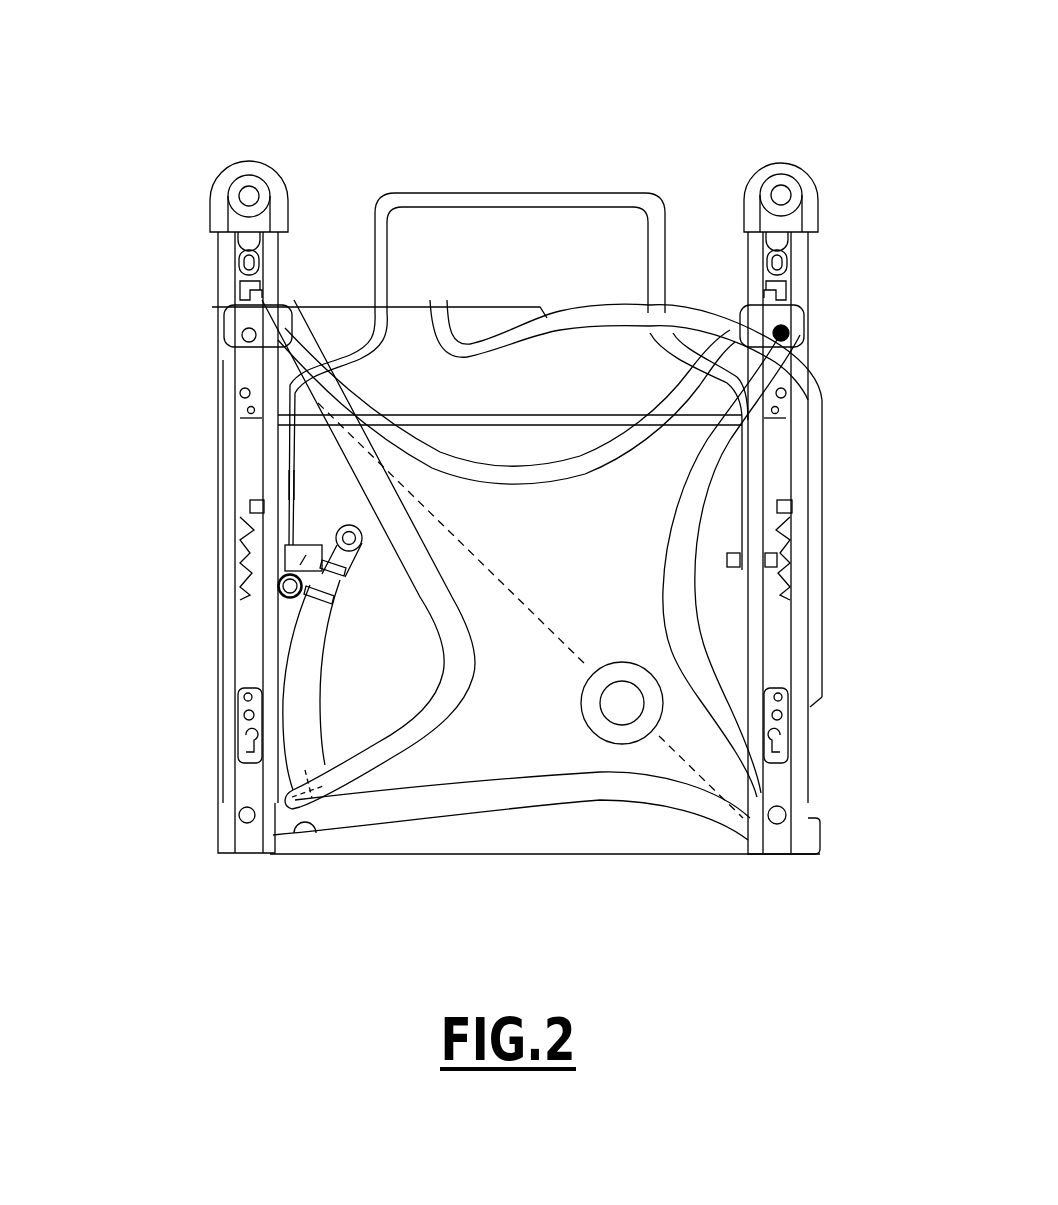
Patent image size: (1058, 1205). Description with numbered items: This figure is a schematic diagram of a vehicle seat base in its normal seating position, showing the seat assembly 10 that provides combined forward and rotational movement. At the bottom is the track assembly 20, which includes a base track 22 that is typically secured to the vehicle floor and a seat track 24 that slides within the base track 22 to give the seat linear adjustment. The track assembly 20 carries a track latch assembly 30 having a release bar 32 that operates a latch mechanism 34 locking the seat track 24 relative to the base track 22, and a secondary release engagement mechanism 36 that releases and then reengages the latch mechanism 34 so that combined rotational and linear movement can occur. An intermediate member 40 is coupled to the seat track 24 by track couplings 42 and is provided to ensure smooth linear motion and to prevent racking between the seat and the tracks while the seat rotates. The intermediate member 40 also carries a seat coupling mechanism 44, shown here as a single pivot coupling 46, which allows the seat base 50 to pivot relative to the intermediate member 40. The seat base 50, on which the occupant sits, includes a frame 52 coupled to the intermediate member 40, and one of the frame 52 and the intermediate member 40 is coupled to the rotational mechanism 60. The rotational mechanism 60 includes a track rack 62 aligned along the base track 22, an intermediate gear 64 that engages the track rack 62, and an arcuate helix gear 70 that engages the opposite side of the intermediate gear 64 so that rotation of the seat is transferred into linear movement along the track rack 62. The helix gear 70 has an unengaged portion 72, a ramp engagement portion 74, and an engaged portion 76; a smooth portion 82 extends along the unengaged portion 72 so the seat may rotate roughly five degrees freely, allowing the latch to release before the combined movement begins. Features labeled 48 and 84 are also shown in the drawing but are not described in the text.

The seat assembly 10 is at (195, 905).
The track assembly 20 is at (238, 135).
The base track 22 is at (802, 212).
The seat track 24 is at (802, 290).
The track latch assembly 30 is at (286, 552).
The release bar 32 is at (485, 190).
The latch mechanism 34 is at (246, 497).
The secondary release engagement mechanism 36 is at (282, 585).
The intermediate member 40 is at (613, 547).
The track couplings 42 is at (222, 332).
The seat coupling mechanism 44 is at (806, 337).
The single pivot coupling 46 is at (622, 745).
The upper frame tube 48 is at (690, 318).
The seat base 50 is at (432, 365).
The frame 52 is at (345, 318).
The rotational mechanism 60 is at (350, 657).
The track rack 62 is at (218, 394).
The intermediate gear 64 is at (300, 600).
The helix gear 70 is at (350, 631).
The unengaged portion 72 is at (362, 552).
The ramp engagement portion 74 is at (362, 590).
The engaged portion 76 is at (320, 777).
The smooth portion 82 is at (300, 486).
The left bracket plate 84 is at (282, 688).